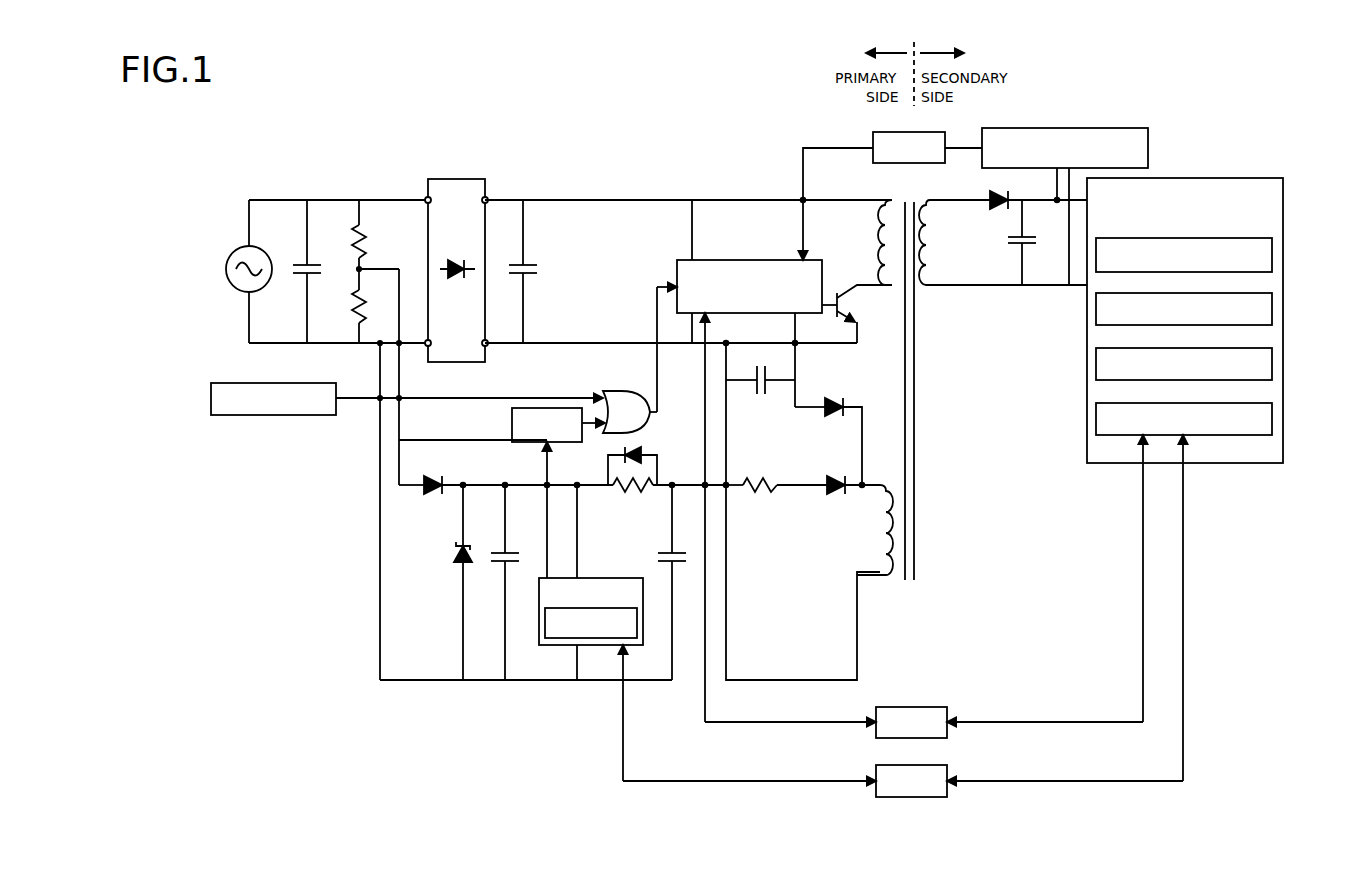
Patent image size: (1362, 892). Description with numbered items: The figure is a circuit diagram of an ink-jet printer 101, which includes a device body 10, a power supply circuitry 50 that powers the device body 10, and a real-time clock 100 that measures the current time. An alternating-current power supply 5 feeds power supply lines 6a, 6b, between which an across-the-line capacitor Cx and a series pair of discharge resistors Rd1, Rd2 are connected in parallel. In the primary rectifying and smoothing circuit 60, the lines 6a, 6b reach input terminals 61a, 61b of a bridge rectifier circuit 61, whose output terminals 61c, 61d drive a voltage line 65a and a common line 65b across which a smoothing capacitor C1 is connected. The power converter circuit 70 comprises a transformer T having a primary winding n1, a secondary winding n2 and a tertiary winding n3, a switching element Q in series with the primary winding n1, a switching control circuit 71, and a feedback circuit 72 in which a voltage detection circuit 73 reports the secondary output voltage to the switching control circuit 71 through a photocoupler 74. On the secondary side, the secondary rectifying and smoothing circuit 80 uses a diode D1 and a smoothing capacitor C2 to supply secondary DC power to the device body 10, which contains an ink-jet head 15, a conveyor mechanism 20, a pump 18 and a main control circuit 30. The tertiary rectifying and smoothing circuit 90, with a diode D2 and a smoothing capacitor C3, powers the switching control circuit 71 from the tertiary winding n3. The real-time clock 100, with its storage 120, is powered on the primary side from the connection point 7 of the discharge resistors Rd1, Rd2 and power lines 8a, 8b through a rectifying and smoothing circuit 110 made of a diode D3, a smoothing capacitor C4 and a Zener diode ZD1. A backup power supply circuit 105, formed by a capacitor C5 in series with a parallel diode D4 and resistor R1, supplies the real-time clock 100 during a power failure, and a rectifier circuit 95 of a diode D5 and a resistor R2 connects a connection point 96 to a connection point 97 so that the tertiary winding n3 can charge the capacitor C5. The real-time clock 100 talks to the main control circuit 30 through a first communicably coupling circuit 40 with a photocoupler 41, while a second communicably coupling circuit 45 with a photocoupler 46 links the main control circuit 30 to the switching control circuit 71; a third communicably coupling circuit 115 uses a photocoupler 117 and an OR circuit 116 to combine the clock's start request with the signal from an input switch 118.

The alternating-current power supply 5 is at (226, 269).
The power supply line 6a is at (282, 198).
The power supply line 6b is at (283, 345).
The connection point 7 is at (355, 270).
The power line 8a is at (399, 427).
The power line 8b is at (380, 459).
The device body 10 is at (1208, 302).
The ink-jet head 15 is at (1272, 258).
The pump 18 is at (1272, 367).
The conveyor mechanism 20 is at (1272, 312).
The main control circuit 30 is at (1272, 422).
The first communicably coupling circuit 40 is at (959, 799).
The photocoupler 41 is at (908, 797).
The second communicably coupling circuit 45 is at (959, 702).
The photocoupler 46 is at (930, 707).
The power supply circuitry 50 is at (343, 96).
The primary rectifying and smoothing circuit 60 is at (478, 235).
The bridge rectifier circuit 61 is at (457, 180).
The input terminal 61a is at (424, 198).
The input terminal 61b is at (426, 346).
The output terminal 61c is at (488, 198).
The output terminal 61d is at (487, 346).
The voltage line 65a is at (558, 198).
The common line 65b is at (558, 340).
The power converter circuit 70 is at (716, 158).
The switching control circuit 71 is at (724, 260).
The feedback circuit 72 is at (1065, 123).
The voltage detection circuit 73 is at (1036, 127).
The photocoupler 74 is at (872, 140).
The secondary rectifying and smoothing circuit 80 is at (1011, 286).
The tertiary rectifying and smoothing circuit 90 is at (795, 399).
The rectifier circuit 95 is at (802, 510).
The connection point 96 is at (674, 486).
The connection point 97 is at (866, 487).
The real-time clock 100 is at (695, 611).
The ink-jet printer 101 is at (290, 734).
The backup power supply circuit 105 is at (644, 475).
The rectifying and smoothing circuit 110 is at (574, 603).
The third communicably coupling circuit 115 is at (615, 393).
The OR circuit 116 is at (626, 391).
The photocoupler 117 is at (512, 427).
The input switch 118 is at (211, 397).
The storage 120 is at (553, 639).
The transformer T is at (925, 406).
The switching element Q is at (833, 284).
The primary winding n1 is at (890, 290).
The secondary winding n2 is at (935, 287).
The tertiary winding n3 is at (886, 578).
The diode D1 is at (987, 197).
The diode D2 is at (837, 414).
The diode D3 is at (428, 490).
The diode D4 is at (648, 454).
The diode D5 is at (839, 490).
The smoothing capacitor C1 is at (537, 262).
The smoothing capacitor C2 is at (1010, 247).
The smoothing capacitor C3 is at (758, 396).
The smoothing capacitor C4 is at (508, 552).
The capacitor C5 is at (664, 552).
The across-the-line capacitor Cx is at (296, 264).
The discharge resistor Rd1 is at (369, 240).
The discharge resistor Rd2 is at (353, 301).
The resistor R1 is at (626, 492).
The resistor R2 is at (760, 488).
The Zener diode ZD1 is at (460, 557).